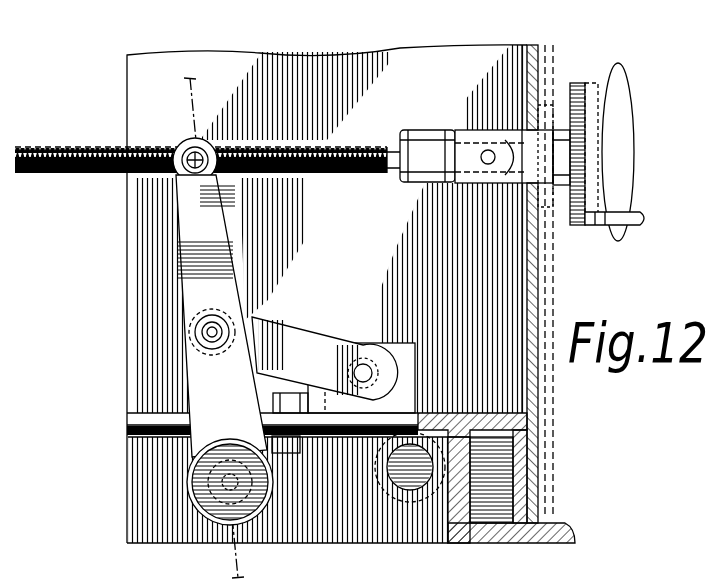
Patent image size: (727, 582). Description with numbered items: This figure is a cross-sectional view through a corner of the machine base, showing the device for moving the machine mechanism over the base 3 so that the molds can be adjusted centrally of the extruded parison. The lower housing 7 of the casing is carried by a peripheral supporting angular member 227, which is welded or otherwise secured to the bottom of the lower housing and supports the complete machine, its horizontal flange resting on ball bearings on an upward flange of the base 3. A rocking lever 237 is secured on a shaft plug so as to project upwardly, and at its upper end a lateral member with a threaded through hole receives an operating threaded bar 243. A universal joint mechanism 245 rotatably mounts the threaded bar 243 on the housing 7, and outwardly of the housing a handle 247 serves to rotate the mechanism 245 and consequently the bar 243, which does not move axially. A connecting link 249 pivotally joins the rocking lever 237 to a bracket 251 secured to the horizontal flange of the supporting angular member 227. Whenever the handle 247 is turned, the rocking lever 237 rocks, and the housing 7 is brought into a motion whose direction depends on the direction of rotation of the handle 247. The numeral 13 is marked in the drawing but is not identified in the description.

The base 3 is at (557, 527).
The lower housing 7 is at (538, 277).
The pivot axis 13 is at (192, 89).
The peripheral supporting angular member 227 is at (528, 457).
The rocking lever 237 is at (182, 268).
The operating threaded bar 243 is at (80, 142).
The universal joint mechanism 245 is at (435, 108).
The handle 247 is at (576, 84).
The connecting link 249 is at (292, 338).
The bracket 251 is at (393, 353).